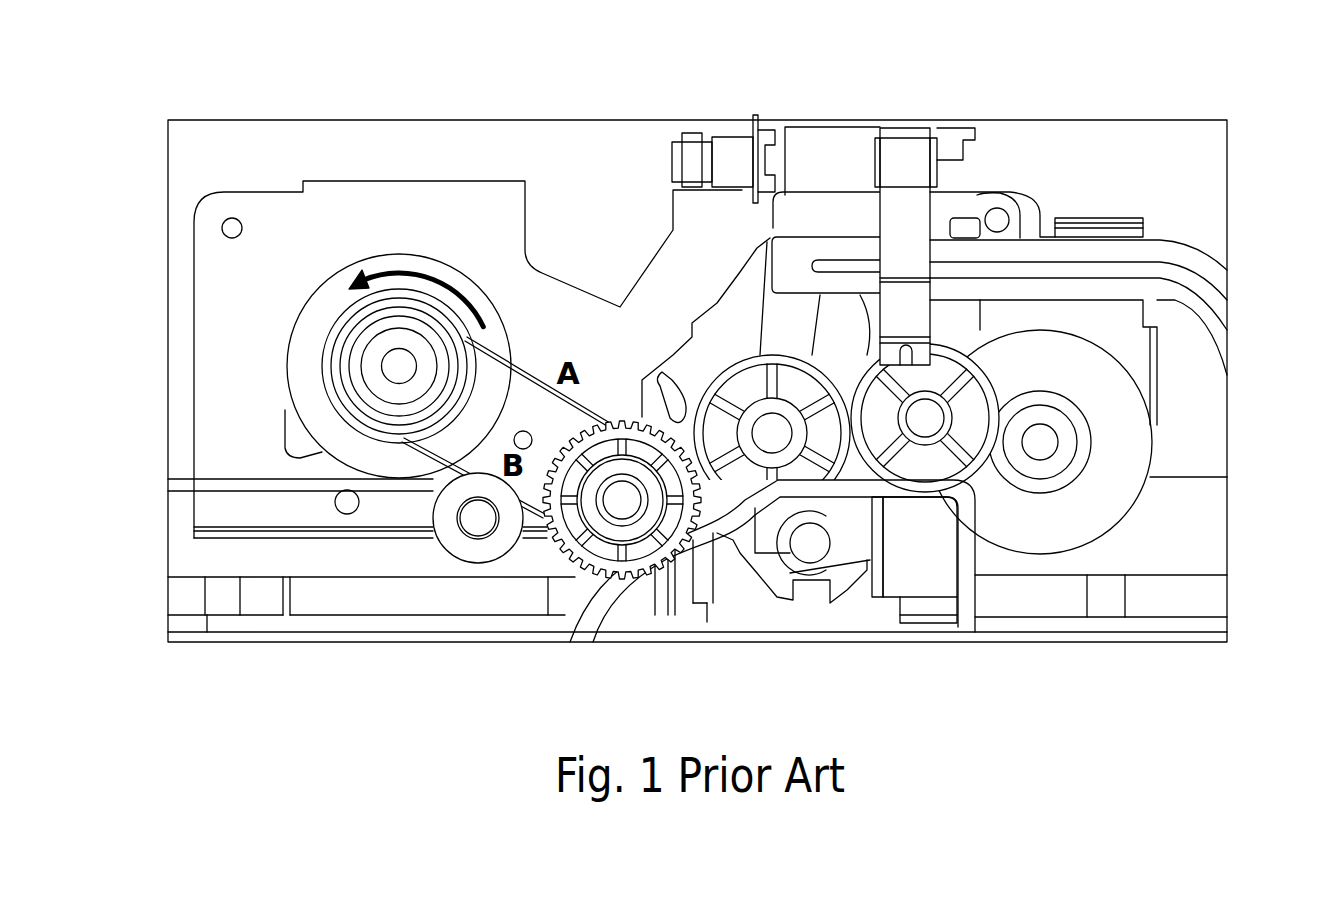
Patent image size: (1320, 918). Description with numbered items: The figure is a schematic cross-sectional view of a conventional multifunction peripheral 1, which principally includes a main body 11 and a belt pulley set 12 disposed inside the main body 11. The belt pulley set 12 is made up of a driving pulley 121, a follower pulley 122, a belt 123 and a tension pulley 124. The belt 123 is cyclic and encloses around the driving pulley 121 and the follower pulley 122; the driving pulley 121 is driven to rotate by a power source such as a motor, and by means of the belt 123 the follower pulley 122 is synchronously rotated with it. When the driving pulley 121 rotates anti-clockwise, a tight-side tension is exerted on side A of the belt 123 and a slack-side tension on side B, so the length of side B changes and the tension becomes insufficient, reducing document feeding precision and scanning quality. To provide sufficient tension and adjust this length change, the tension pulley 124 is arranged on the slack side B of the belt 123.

The multifunction peripheral 1 is at (123, 69).
The main body 11 is at (1203, 186).
The belt pulley set 12 is at (437, 245).
The driving pulley 121 is at (300, 358).
The follower pulley 122 is at (598, 420).
The belt 123 is at (522, 368).
The tension pulley 124 is at (477, 553).